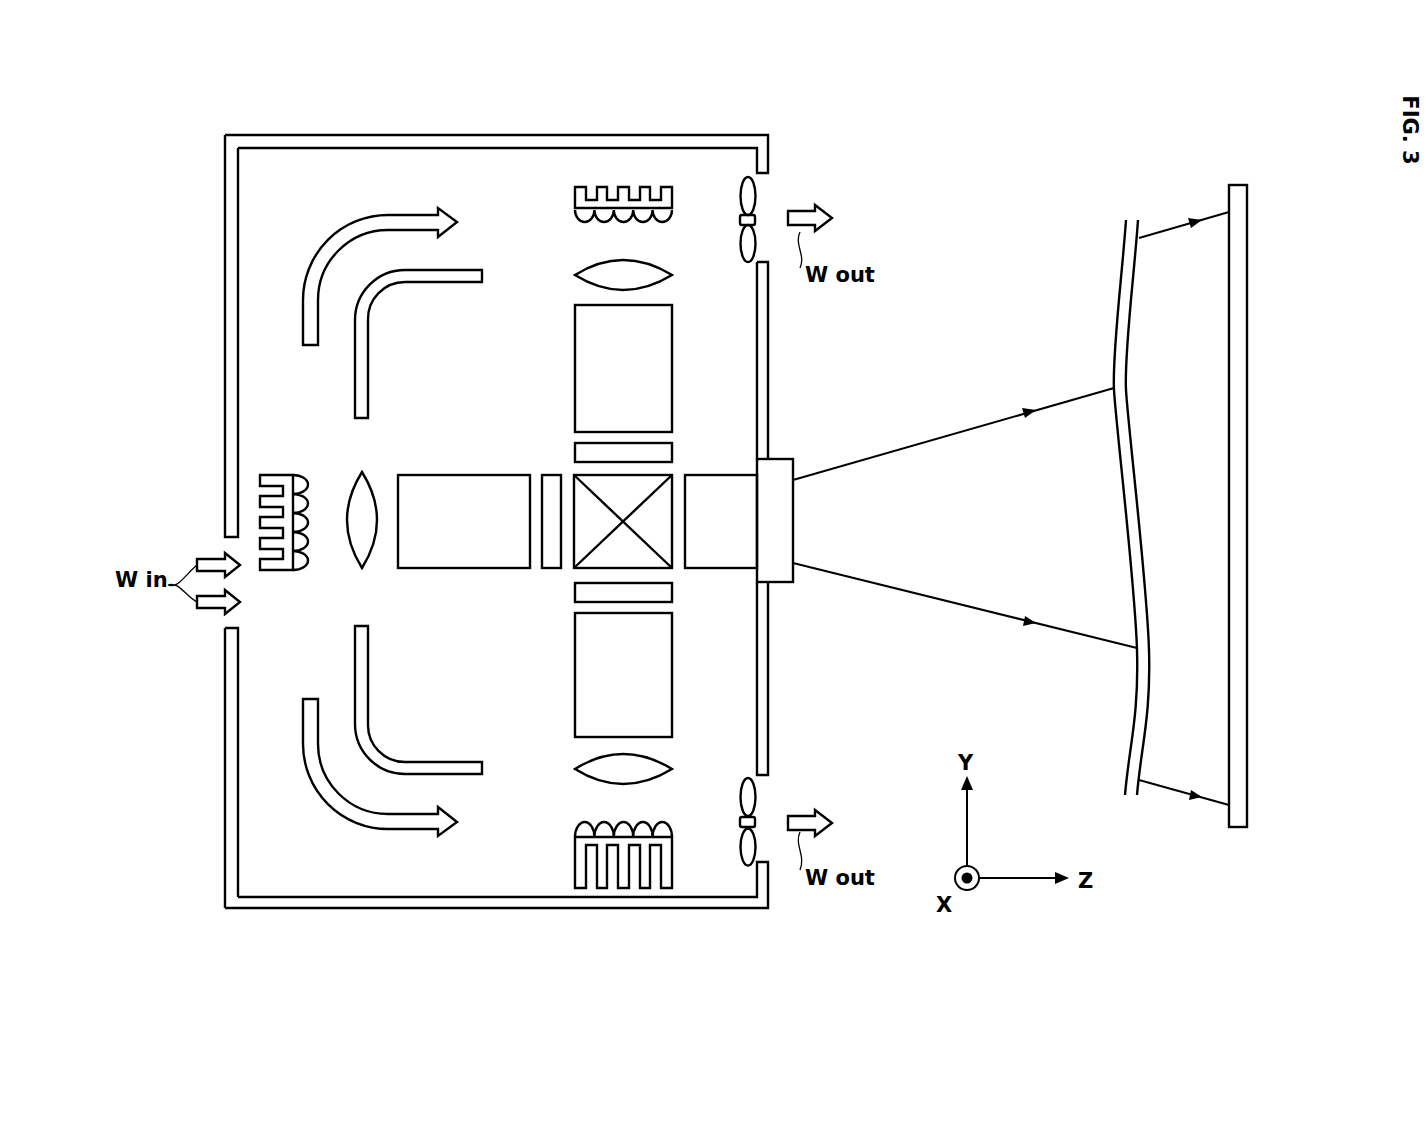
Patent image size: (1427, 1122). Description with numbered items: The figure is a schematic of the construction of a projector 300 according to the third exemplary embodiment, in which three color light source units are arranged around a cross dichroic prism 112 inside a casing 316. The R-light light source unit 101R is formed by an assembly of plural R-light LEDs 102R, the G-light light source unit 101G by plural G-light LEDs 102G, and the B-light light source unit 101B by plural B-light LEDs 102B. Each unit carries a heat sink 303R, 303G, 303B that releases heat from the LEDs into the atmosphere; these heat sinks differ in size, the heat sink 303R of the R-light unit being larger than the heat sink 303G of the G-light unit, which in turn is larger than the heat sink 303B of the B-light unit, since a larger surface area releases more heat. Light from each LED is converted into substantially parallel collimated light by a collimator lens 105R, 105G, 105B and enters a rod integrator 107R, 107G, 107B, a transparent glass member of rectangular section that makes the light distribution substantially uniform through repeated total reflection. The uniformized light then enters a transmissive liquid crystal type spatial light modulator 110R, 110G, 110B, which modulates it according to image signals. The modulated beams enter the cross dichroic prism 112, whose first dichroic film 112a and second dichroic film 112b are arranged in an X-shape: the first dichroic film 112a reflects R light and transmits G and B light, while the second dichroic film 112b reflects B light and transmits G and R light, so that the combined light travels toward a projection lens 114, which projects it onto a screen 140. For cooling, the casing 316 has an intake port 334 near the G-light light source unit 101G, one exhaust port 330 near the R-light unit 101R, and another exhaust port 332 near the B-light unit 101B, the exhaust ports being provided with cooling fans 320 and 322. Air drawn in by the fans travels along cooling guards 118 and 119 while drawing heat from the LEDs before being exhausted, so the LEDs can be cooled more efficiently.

The projector 300 is at (908, 188).
The casing 316 is at (681, 135).
The exhaust port 330 is at (770, 865).
The exhaust port 332 is at (770, 268).
The intake port 334 is at (232, 537).
The cooling fan 320 is at (752, 796).
The cooling fan 322 is at (752, 195).
The cooling guard 118 is at (388, 765).
The cooling guard 119 is at (370, 310).
The B-light light source unit 101B is at (598, 213).
The G-light light source unit 101G is at (313, 519).
The R-light light source unit 101R is at (609, 844).
The B-light LED 102B is at (575, 217).
The G-light LED 102G is at (305, 570).
The R-light LED 102R is at (664, 824).
The heat sink 303B is at (666, 186).
The heat sink 303G is at (270, 570).
The heat sink 303R is at (672, 868).
The collimator lens 105B is at (575, 276).
The collimator lens 105G is at (360, 476).
The collimator lens 105R is at (664, 770).
The rod integrator 107B is at (575, 362).
The rod integrator 107G is at (450, 476).
The rod integrator 107R is at (672, 694).
The B-light liquid crystal type spatial light modulator 110B is at (672, 452).
The G-light liquid crystal type spatial light modulator 110G is at (552, 568).
The R-light liquid crystal type spatial light modulator 110R is at (672, 598).
The cross dichroic prism 112 is at (624, 528).
The first dichroic film 112a is at (582, 567).
The second dichroic film 112b is at (582, 480).
The projection lens 114 is at (782, 582).
The screen 140 is at (1235, 828).